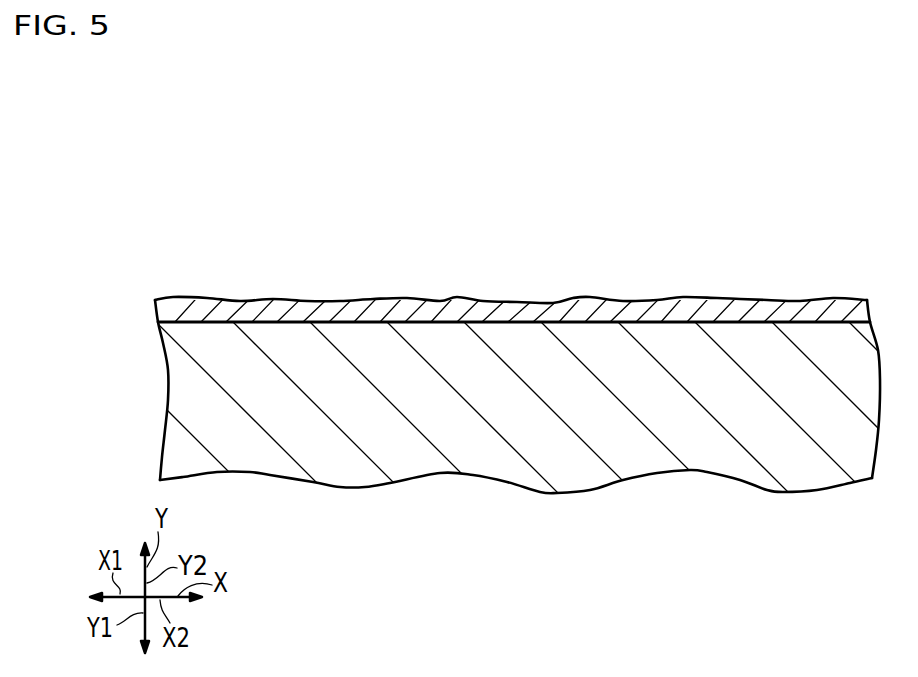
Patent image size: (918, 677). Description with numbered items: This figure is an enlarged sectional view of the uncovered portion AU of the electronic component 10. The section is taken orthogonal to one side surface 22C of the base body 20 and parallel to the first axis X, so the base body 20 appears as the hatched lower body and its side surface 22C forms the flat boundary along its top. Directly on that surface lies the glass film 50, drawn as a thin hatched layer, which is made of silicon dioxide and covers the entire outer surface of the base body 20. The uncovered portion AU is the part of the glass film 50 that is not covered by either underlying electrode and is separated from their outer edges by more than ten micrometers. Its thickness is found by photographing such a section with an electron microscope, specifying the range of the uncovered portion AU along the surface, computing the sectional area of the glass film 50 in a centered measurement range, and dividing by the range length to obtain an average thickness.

The electronic component 10 is at (219, 137).
The base body 20 is at (343, 472).
The side surface 22C is at (514, 288).
The glass film 50 is at (480, 308).
The uncovered portion AU is at (301, 273).